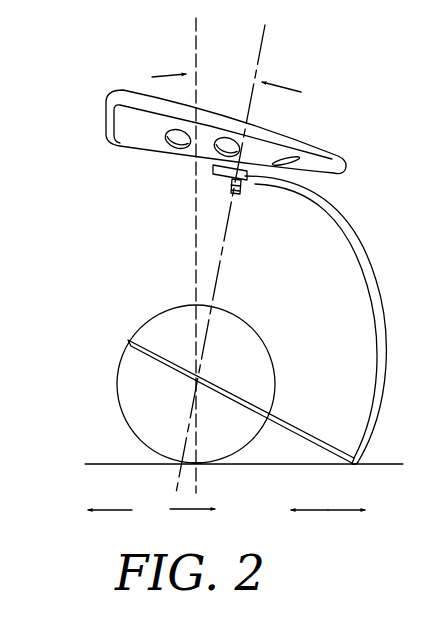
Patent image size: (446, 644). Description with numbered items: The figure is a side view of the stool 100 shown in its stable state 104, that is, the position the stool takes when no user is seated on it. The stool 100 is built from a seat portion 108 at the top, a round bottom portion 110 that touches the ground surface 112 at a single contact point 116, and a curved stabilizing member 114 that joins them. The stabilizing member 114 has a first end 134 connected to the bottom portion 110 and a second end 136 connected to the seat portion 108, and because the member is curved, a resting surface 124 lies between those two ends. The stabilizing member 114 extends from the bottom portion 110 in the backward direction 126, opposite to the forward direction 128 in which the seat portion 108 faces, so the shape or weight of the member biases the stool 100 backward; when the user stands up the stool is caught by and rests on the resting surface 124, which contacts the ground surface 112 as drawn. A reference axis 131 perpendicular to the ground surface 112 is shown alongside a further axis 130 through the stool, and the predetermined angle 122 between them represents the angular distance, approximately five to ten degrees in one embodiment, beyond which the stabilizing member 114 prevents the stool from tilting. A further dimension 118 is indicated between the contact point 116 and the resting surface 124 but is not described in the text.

The stool 100 is at (82, 118).
The stable state 104 is at (160, 354).
The seat portion 108 is at (323, 146).
The bottom portion 110 is at (130, 380).
The ground surface 112 is at (107, 463).
The stabilizing member 114 is at (350, 218).
The contact point 116 is at (201, 465).
The distance 118 is at (324, 512).
The predetermined angle 122 is at (250, 95).
The resting surface 124 is at (356, 466).
The backward direction 126 is at (190, 512).
The forward direction 128 is at (127, 512).
The tilted axis 130 is at (266, 40).
The reference axis 131 is at (194, 30).
The first end 134 is at (310, 435).
The second end 136 is at (255, 182).